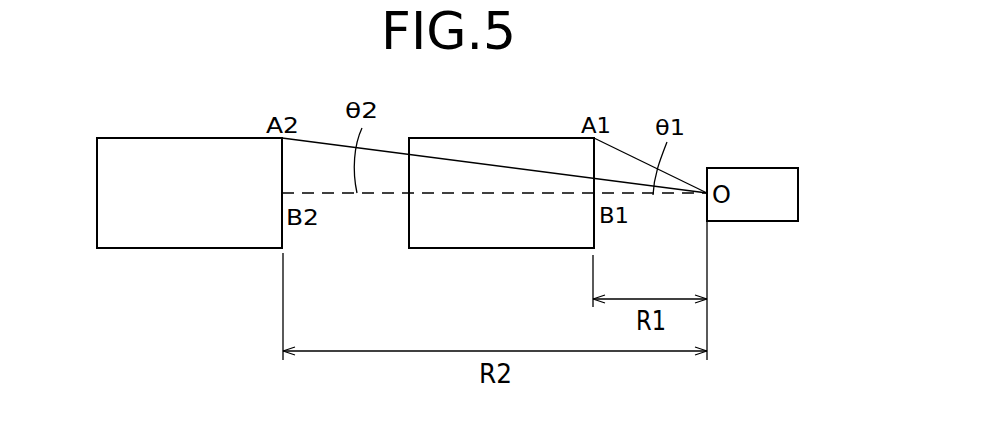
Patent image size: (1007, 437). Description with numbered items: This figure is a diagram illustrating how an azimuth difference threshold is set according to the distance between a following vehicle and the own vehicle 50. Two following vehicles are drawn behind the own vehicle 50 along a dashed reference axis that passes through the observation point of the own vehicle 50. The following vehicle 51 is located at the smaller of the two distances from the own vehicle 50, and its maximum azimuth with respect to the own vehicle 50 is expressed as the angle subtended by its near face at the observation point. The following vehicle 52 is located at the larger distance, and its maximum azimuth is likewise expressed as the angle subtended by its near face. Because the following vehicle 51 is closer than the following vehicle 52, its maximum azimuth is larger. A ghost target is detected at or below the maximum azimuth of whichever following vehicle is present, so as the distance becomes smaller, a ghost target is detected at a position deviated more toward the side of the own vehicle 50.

The own vehicle 50 is at (779, 167).
The following vehicle 51 is at (482, 137).
The following vehicle 52 is at (168, 137).